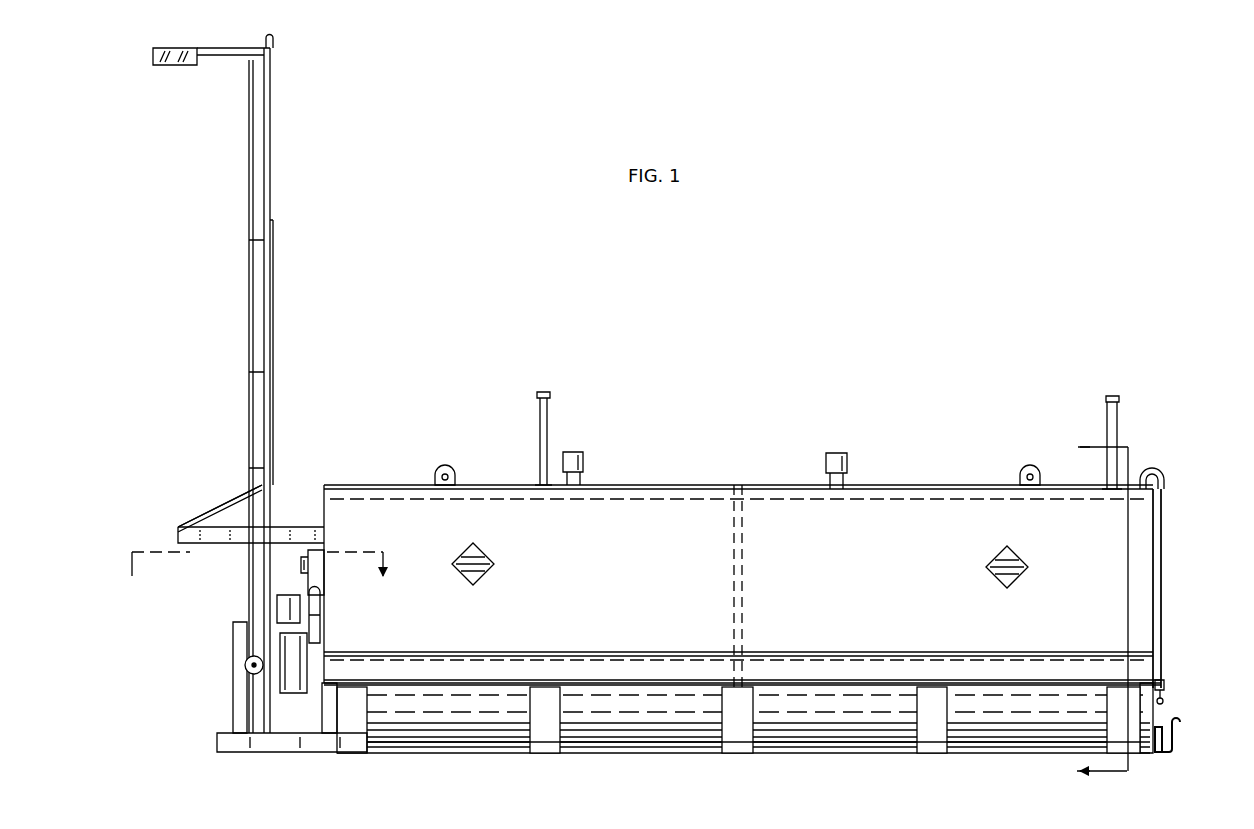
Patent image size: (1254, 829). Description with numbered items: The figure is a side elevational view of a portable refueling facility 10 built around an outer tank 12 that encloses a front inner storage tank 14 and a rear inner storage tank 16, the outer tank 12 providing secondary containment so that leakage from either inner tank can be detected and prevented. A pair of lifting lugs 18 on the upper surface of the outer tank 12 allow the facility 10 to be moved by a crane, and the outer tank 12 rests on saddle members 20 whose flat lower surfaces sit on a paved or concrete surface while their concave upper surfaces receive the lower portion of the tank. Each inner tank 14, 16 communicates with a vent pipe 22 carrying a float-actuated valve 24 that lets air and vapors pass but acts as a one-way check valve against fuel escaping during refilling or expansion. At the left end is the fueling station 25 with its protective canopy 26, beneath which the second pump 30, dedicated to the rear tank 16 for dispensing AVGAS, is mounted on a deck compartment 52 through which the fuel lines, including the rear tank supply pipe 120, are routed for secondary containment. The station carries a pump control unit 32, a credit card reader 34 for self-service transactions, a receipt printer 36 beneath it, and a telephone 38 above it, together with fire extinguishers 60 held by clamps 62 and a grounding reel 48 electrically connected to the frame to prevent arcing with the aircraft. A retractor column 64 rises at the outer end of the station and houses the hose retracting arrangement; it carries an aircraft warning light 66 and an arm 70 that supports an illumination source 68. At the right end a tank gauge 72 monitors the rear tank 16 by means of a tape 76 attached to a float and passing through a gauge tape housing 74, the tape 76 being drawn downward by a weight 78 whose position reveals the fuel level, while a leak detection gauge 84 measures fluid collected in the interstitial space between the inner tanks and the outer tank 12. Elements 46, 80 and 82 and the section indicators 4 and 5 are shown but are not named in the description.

The refueling facility 10 is at (783, 342).
The outer tank 12 is at (693, 487).
The front inner storage tank 14 is at (618, 515).
The rear inner storage tank 16 is at (902, 522).
The lifting lugs 18 is at (440, 468).
The saddle members 20 is at (950, 723).
The vent pipe 22 is at (540, 440).
The valve 24 is at (541, 392).
The fueling station 25 is at (197, 415).
The protective canopy 26 is at (217, 503).
The second pump 30 is at (233, 637).
The pump control unit 32 is at (303, 672).
The credit card reader 34 is at (277, 608).
The receipt printer 36 is at (300, 708).
The telephone 38 is at (300, 560).
The hose pipe 46 is at (249, 168).
The grounding reel 48 is at (246, 660).
The deck compartment 52 is at (217, 735).
The fire extinguishers 60 is at (308, 577).
The clamps 62 is at (309, 612).
The retractor column 64 is at (272, 140).
The aircraft warning light 66 is at (273, 42).
The illumination source 68 is at (153, 60).
The arm 70 is at (222, 57).
The tank gauge 72 is at (1175, 477).
The gauge tape housing 74 is at (1155, 468).
The tape 76 is at (1163, 532).
The weight 78 is at (1164, 700).
The drain valve 80 is at (1164, 683).
The bottom frame rail 82 is at (1082, 685).
The leak detection gauge 84 is at (1183, 737).
The rear tank supply pipe 120 is at (477, 740).
The section line 4- 4 is at (1094, 608).
The section line 5- 5 is at (258, 576).